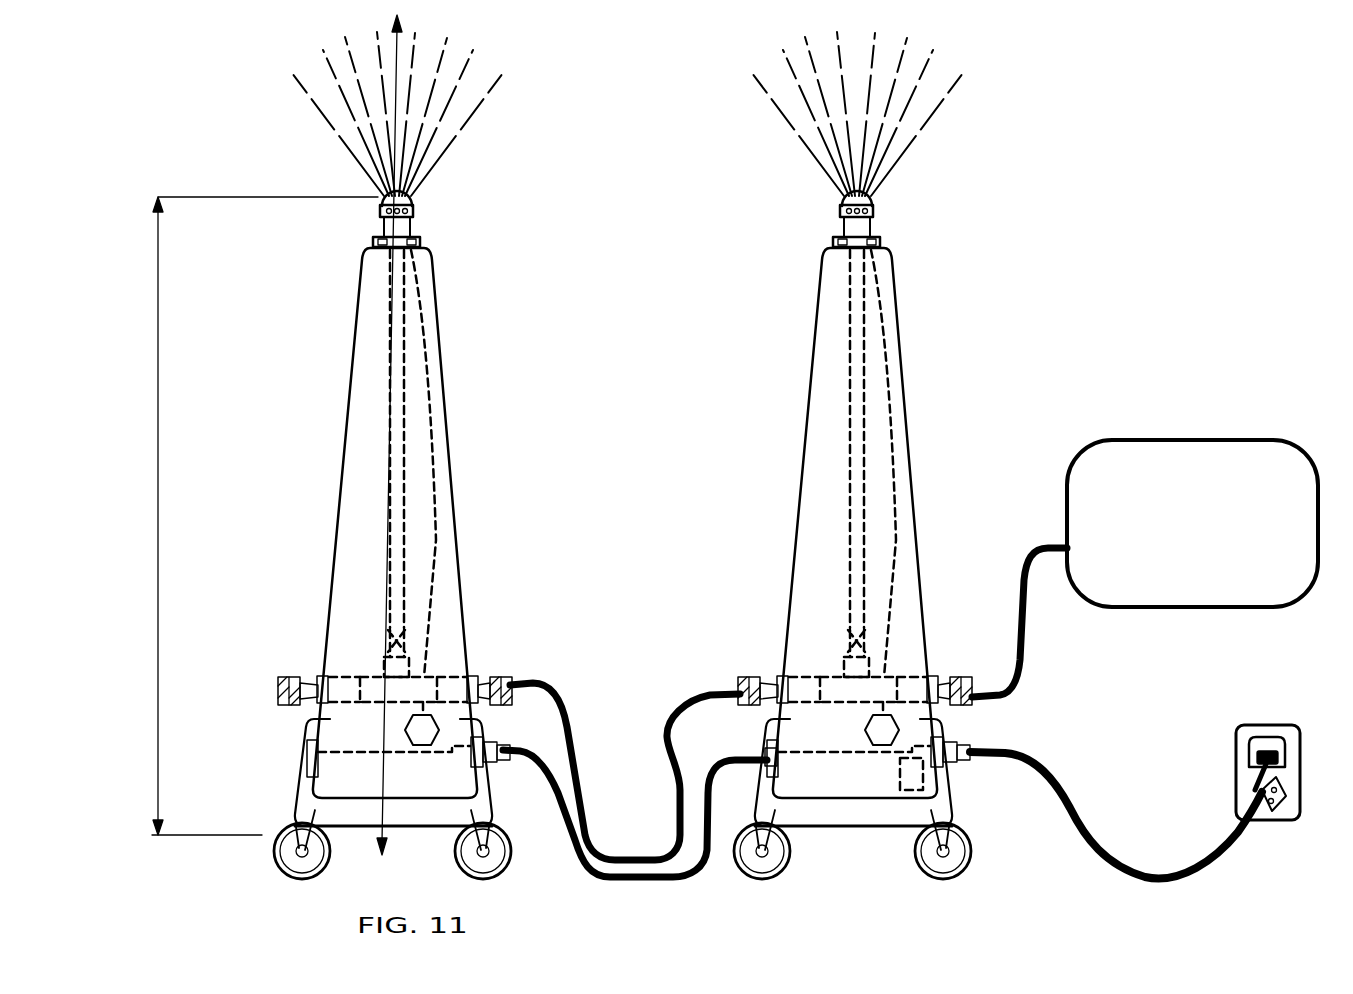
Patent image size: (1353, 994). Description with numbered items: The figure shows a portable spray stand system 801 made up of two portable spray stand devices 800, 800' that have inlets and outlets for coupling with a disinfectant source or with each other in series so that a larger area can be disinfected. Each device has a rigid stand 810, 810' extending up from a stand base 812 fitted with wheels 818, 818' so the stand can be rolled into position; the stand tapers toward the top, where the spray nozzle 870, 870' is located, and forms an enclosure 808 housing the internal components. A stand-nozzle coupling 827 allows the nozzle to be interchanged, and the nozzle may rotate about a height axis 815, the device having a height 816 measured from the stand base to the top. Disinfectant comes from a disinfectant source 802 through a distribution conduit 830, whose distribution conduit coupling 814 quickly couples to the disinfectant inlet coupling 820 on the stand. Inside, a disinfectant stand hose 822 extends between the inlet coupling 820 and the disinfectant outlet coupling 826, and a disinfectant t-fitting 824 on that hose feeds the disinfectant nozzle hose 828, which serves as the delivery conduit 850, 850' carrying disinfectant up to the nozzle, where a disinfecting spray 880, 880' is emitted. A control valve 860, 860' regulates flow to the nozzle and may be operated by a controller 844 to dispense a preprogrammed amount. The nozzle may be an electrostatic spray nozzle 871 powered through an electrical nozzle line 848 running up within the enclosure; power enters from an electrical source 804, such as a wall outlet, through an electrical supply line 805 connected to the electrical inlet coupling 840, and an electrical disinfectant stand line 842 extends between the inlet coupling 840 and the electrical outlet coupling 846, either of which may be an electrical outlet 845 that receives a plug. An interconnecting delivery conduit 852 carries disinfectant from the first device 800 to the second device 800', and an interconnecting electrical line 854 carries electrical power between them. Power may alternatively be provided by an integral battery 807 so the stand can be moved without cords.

The portable spray stand system 801 is at (296, 169).
The portable spray stand device 800 is at (862, 480).
The second portable spray stand device 800' is at (406, 447).
The height axis 815 is at (400, 60).
The disinfecting spray 880 is at (902, 114).
The disinfecting spray 880' is at (445, 114).
The spray nozzle 870 is at (927, 221).
The nozzle 870' is at (473, 214).
The electrostatic spray nozzle 871 is at (786, 192).
The stand-nozzle coupling 827 is at (931, 252).
The electrical nozzle line 848 is at (943, 463).
The delivery conduit 850 is at (781, 439).
The delivery conduit 850' is at (327, 439).
The disinfectant nozzle hose 828 is at (796, 439).
The enclosure 808 is at (812, 523).
The rigid stand 810 is at (812, 523).
The rigid stand 810' is at (356, 523).
The disinfectant source 802 is at (1090, 453).
The distribution conduit 830 is at (1020, 560).
The control valve 860 is at (795, 630).
The control valve 860' is at (335, 625).
The disinfectant outlet coupling 826 is at (721, 656).
The disinfectant t-fitting 824 is at (826, 664).
The disinfectant inlet coupling 820 is at (951, 648).
The distribution conduit coupling 814 is at (980, 659).
The height 816 is at (264, 516).
The interconnecting delivery conduit 852 is at (563, 720).
The interconnecting electrical line 854 is at (556, 830).
The disinfectant stand hose 822 is at (754, 738).
The electrical outlet 845 is at (854, 750).
The electrical inlet coupling 840 is at (1000, 729).
The battery 807 is at (892, 817).
The electrical supply line 805 is at (1135, 872).
The electrical source 804 is at (1248, 733).
The wheels 818 is at (725, 869).
The wheels 818' is at (271, 818).
The stand base 812 is at (985, 853).
The electrical disinfectant stand line 842 is at (853, 817).
The controller 844 is at (892, 793).
The electrical outlet coupling 846 is at (801, 806).